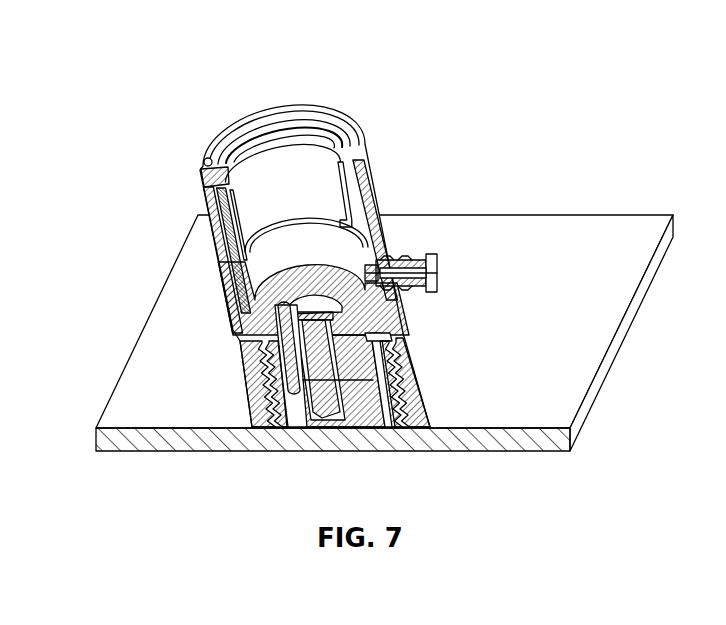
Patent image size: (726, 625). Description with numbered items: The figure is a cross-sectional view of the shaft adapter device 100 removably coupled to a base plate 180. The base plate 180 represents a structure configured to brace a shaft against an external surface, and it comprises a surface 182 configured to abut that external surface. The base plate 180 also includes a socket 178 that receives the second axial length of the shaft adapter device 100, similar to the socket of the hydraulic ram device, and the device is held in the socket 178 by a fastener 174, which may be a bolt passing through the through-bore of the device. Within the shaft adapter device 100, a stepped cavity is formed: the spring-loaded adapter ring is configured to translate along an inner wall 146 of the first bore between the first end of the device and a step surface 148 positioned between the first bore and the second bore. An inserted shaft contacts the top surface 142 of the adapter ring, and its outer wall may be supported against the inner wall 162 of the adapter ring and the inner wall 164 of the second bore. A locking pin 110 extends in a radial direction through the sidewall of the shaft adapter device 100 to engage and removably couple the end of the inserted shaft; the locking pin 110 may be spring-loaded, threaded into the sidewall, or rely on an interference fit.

The shaft adapter device 100 is at (397, 138).
The locking pin 110 is at (436, 262).
The top surface 142 is at (292, 133).
The inner wall 146 is at (272, 187).
The step surface 148 is at (266, 280).
The inner wall 162 is at (238, 150).
The inner wall 164 is at (245, 290).
The fastener 174 is at (323, 348).
The socket 178 is at (378, 356).
The base plate 180 is at (604, 454).
The surface 182 is at (538, 462).